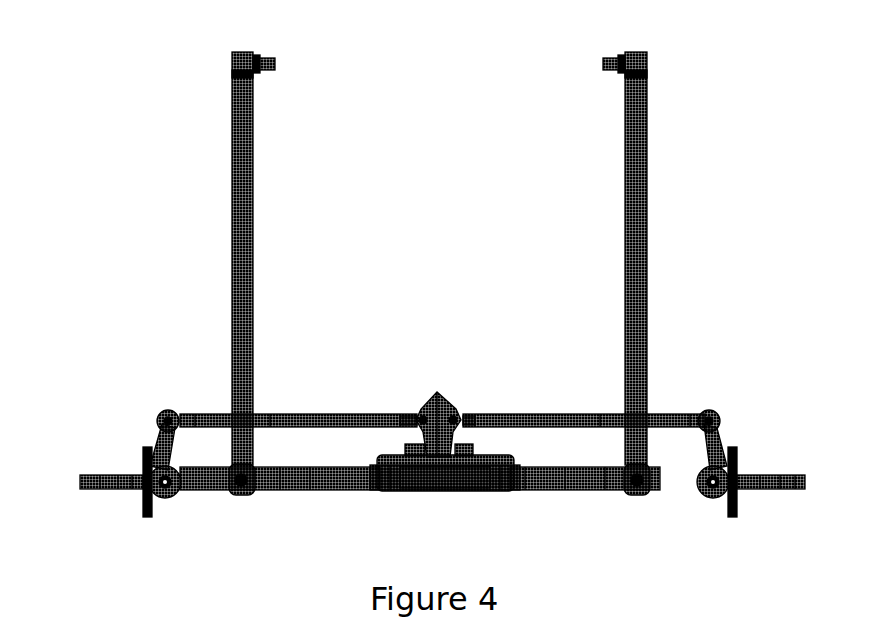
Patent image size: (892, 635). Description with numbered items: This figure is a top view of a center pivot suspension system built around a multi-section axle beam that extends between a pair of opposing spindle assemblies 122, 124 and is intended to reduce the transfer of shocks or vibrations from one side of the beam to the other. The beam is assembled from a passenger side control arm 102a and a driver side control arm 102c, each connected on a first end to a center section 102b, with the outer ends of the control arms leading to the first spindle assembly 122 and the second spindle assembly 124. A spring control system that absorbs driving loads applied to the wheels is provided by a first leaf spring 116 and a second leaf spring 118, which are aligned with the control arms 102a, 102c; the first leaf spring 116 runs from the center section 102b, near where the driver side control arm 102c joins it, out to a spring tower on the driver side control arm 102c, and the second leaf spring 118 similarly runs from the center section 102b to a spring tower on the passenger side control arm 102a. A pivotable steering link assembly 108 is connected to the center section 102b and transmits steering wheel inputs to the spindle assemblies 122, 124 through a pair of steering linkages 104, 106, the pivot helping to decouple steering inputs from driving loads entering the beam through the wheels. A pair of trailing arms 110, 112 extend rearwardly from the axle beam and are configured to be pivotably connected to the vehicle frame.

The passenger side control arm 102a is at (222, 491).
The center section 102b is at (420, 492).
The driver side control arm 102c is at (650, 492).
The steering linkage 104 is at (304, 415).
The steering linkage 106 is at (545, 415).
The steering link assembly 108 is at (438, 395).
The trailing arm 110 is at (244, 121).
The trailing arm 112 is at (627, 170).
The first leaf spring 116 is at (538, 491).
The second leaf spring 118 is at (326, 491).
The first spindle assembly 122 is at (733, 456).
The second spindle assembly 124 is at (143, 456).